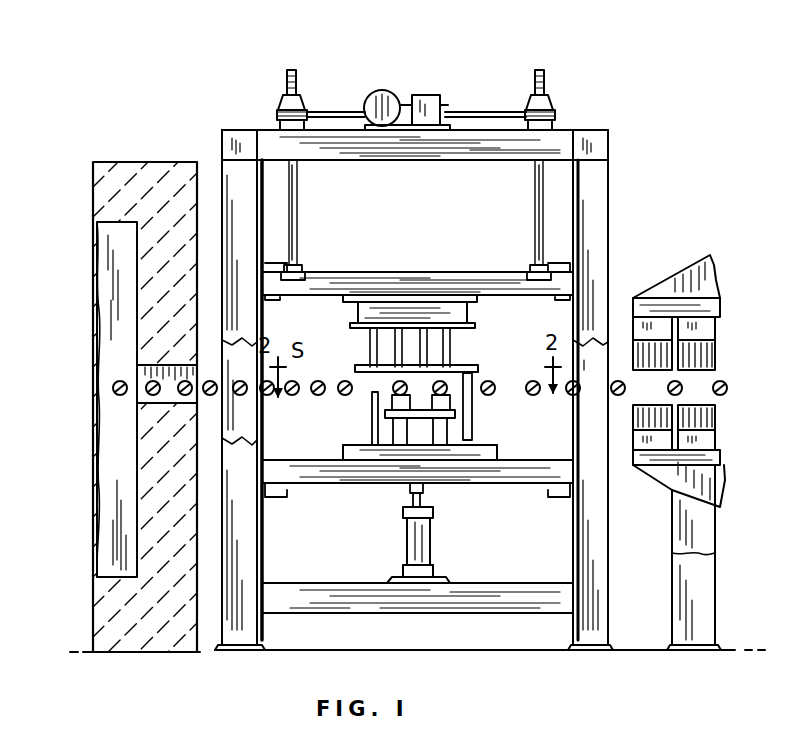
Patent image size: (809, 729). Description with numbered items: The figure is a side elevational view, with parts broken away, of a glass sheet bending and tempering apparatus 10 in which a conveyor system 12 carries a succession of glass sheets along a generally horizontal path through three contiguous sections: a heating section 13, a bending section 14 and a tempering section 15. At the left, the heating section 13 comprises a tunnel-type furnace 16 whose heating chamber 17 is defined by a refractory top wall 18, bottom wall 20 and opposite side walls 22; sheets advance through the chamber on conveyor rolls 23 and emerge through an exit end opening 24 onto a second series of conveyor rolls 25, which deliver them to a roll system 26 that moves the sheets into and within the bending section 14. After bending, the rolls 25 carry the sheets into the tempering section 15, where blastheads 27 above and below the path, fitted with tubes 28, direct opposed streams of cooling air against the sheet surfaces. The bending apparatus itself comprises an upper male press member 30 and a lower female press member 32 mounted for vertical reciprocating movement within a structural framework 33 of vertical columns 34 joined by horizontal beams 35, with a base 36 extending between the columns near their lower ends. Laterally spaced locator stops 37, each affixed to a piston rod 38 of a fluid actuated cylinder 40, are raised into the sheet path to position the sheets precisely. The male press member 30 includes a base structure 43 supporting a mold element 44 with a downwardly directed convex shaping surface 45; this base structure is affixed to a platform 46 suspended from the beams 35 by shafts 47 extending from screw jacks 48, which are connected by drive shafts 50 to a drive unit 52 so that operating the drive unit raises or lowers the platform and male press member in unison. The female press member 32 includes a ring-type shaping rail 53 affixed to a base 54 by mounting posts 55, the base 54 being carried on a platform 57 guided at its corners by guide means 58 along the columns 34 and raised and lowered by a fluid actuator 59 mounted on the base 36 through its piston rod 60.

The glass sheet bending and tempering apparatus 10 is at (200, 60).
The conveyor system 12 is at (88, 411).
The heating section 13 is at (92, 112).
The bending section 14 is at (451, 350).
The tempering section 15 is at (709, 422).
The tunnel-type furnace 16 is at (101, 404).
The heating chamber 17 is at (110, 290).
The top wall 18 is at (122, 172).
The bottom wall 20 is at (118, 602).
The side walls 22 is at (130, 473).
The conveyor rolls 23 is at (416, 393).
The exit end opening 24 is at (145, 376).
The conveyor rolls 25 is at (300, 398).
The roll system 26 is at (384, 382).
The blastheads 27 is at (714, 326).
The tubes 28 is at (712, 356).
The upper male press member 30 is at (422, 333).
The lower female press member 32 is at (406, 407).
The structural framework 33 is at (451, 390).
The columns 34 is at (600, 243).
The beams 35 is at (424, 150).
The base 36 is at (500, 612).
The locator stops 37 is at (470, 382).
The piston rod 38 is at (472, 410).
The fluid actuated cylinder 40 is at (478, 432).
The base structure 43 is at (352, 312).
The mold element 44 is at (365, 340).
The shaping surface 45 is at (462, 365).
The platform 46 is at (395, 278).
The shafts 47 is at (302, 203).
The screw jacks 48 is at (278, 112).
The drive shafts 50 is at (330, 110).
The drive unit 52 is at (425, 95).
The shaping rail 53 is at (370, 396).
The base 54 is at (385, 452).
The mounting posts 55 is at (358, 458).
The platform 57 is at (484, 478).
The guide means 58 is at (286, 486).
The fluid actuator 59 is at (426, 533).
The piston rod 60 is at (410, 498).